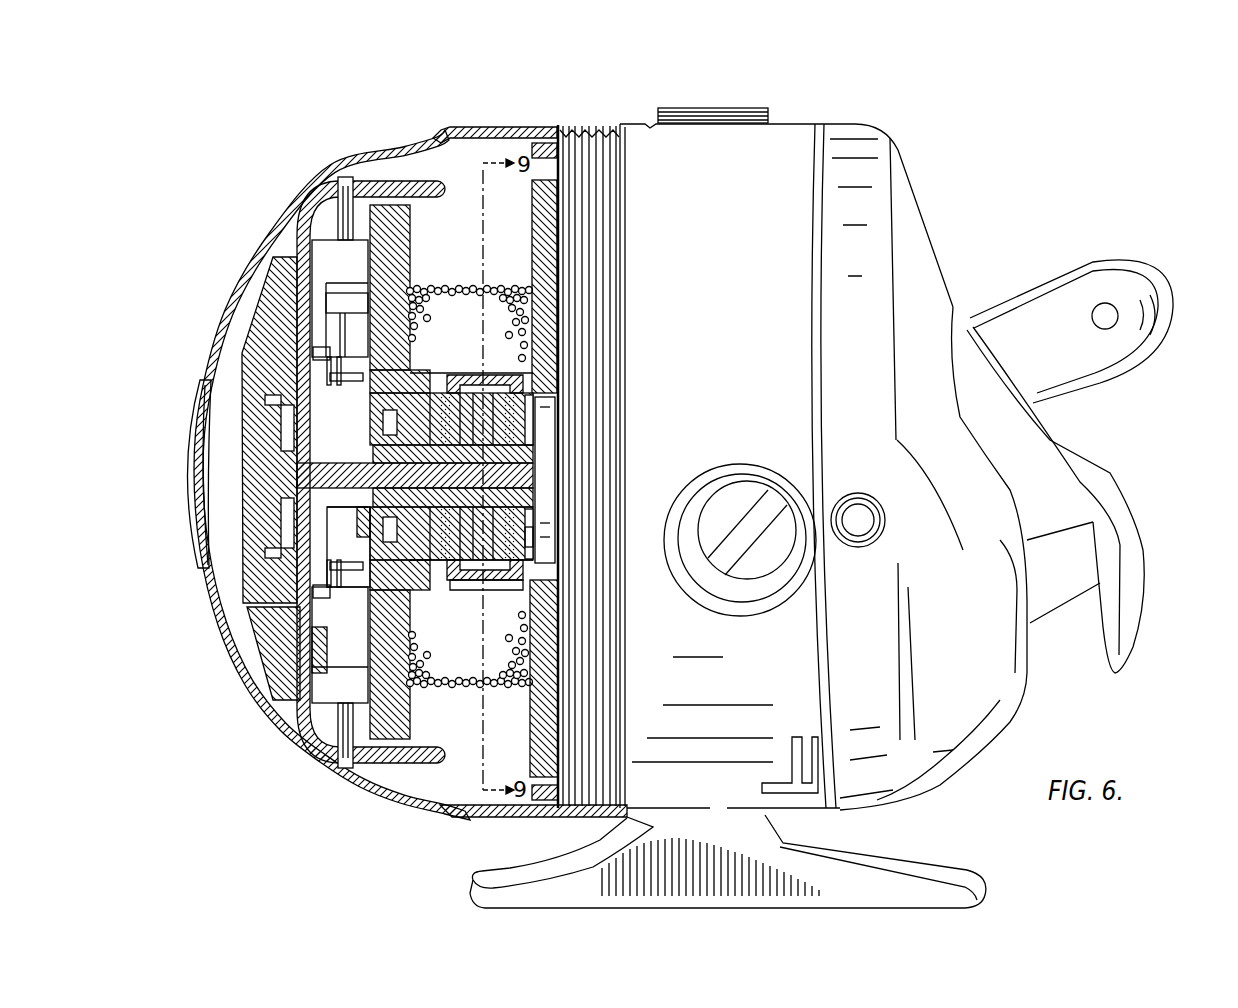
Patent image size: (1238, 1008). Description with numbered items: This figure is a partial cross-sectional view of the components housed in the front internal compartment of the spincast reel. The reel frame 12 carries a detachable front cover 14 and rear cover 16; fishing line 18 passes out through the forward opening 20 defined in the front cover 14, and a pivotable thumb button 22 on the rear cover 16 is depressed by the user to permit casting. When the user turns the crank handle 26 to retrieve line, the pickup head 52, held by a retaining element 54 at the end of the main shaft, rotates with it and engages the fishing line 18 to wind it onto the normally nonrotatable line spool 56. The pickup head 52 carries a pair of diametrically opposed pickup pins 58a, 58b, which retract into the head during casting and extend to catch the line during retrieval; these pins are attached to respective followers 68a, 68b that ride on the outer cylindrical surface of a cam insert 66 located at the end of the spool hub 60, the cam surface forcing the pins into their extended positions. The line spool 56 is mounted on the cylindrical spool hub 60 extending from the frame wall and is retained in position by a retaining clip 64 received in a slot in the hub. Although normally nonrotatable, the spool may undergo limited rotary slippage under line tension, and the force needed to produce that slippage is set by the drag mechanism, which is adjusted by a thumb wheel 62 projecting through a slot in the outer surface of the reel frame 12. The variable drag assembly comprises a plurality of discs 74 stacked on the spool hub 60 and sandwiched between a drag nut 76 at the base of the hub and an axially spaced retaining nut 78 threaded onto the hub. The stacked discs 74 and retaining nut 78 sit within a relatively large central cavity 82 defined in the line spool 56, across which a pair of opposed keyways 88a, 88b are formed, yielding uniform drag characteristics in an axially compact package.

The reel frame 12 is at (792, 132).
The front cover 14 is at (224, 283).
The rear cover 16 is at (920, 255).
The fishing line 18 is at (440, 288).
The forward opening 20 is at (190, 505).
The thumb button 22 is at (1135, 512).
The crank handle 26 is at (1020, 300).
The pickup head 52 is at (295, 737).
The retaining element 54 is at (205, 393).
The line spool 56 is at (530, 200).
The pickup pin 58a is at (347, 175).
The pickup pin 58b is at (350, 777).
The spool hub 60 is at (505, 537).
The thumb wheel 62 is at (704, 107).
The retaining clip 64 is at (360, 527).
The cam insert 66 is at (280, 558).
The follower 68a is at (330, 258).
The follower 68b is at (327, 612).
The discs 74 is at (535, 567).
The drag nut 76 is at (530, 393).
The retaining nut 78 is at (300, 424).
The central cavity 82 is at (432, 395).
The keyway 88a is at (496, 393).
The keyway 88b is at (490, 593).